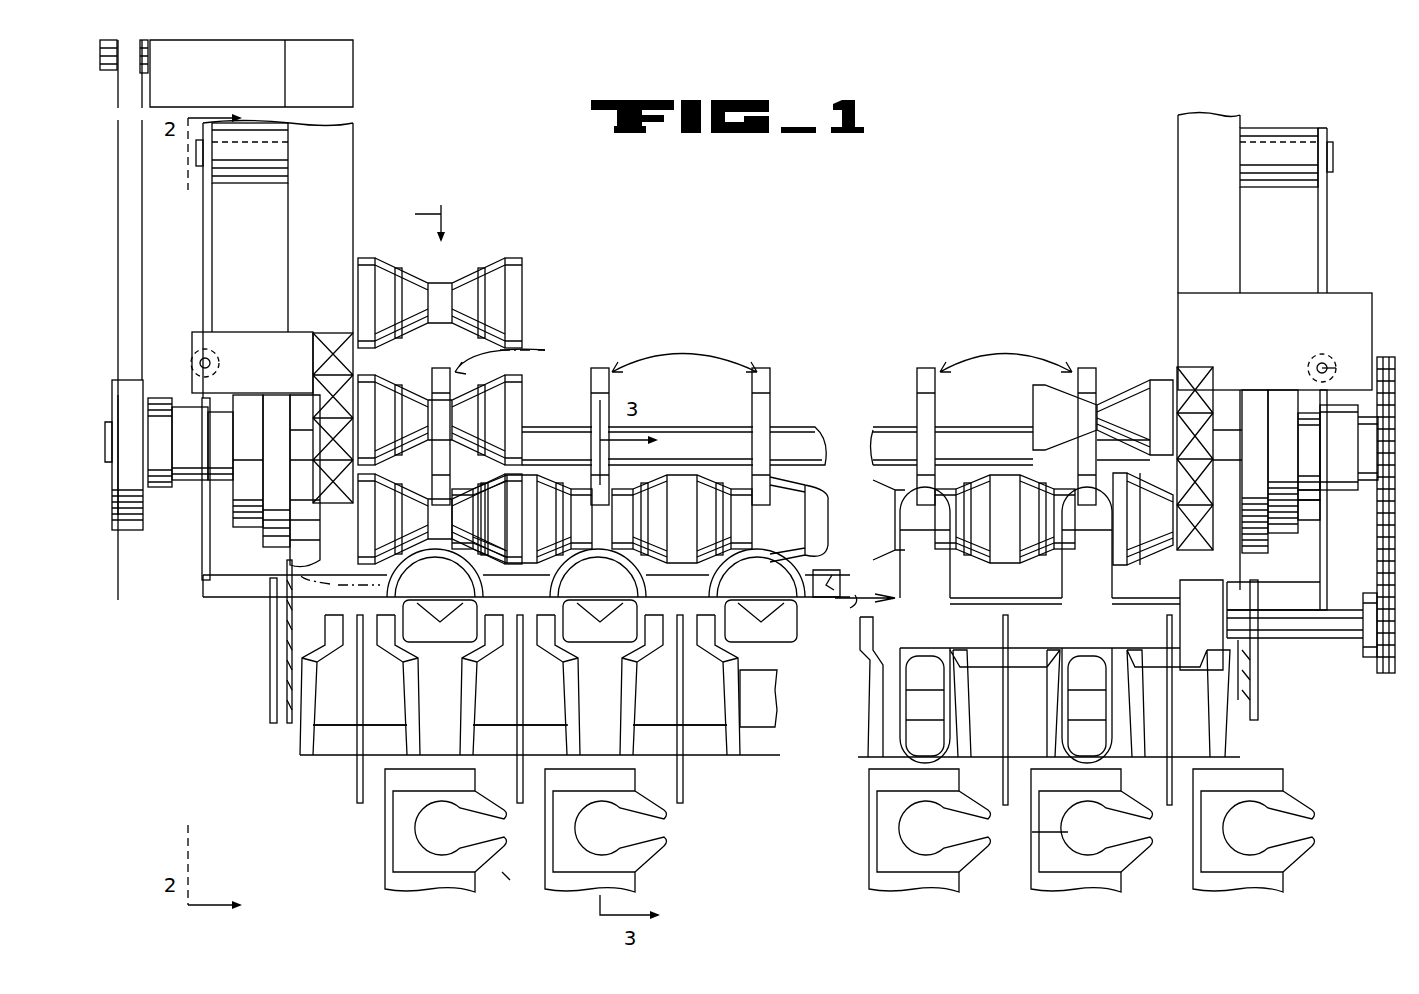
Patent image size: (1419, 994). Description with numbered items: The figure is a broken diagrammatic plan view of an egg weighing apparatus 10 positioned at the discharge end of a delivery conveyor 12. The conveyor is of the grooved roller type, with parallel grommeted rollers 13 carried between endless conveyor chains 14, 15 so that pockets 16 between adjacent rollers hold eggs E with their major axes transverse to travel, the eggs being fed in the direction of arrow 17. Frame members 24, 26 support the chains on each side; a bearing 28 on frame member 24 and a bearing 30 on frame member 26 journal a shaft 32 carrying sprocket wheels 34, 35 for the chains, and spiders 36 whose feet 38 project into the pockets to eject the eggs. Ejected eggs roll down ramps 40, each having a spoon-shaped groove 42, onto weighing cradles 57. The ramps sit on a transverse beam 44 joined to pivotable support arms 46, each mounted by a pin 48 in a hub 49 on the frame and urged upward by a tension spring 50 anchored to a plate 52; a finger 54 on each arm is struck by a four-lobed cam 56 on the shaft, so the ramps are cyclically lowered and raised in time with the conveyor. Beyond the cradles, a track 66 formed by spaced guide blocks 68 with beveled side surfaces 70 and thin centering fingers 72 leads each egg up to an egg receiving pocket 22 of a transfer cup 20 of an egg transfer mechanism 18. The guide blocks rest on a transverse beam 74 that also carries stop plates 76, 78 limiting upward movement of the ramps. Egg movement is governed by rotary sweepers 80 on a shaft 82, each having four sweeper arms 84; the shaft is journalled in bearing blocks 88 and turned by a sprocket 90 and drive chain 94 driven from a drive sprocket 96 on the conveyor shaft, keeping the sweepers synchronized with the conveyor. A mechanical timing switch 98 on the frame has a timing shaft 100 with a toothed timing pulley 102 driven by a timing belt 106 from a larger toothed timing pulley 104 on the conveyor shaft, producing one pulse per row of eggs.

The egg weighing apparatus 10 is at (830, 767).
The delivery conveyor 12 is at (1152, 364).
The grooved rollers 13 is at (522, 276).
The endless conveyor chain 14 is at (322, 357).
The endless conveyor chain 15 is at (1218, 410).
The pockets 16 is at (460, 340).
The arrow 17 is at (415, 221).
The egg transfer mechanism 18 is at (370, 844).
The transfer cup 20 is at (480, 865).
The egg receiving pocket 22 is at (458, 834).
The frame member 24 is at (353, 123).
The frame member 26 is at (1178, 160).
The bearing 28 is at (274, 400).
The bearing 30 is at (1268, 390).
The shaft 32 is at (875, 425).
The sprocket wheel 34 is at (353, 380).
The sprocket wheel 35 is at (1200, 385).
The spiders 36 is at (763, 357).
The feet 38 is at (609, 385).
The ramps 40 is at (538, 548).
The spoon-shaped groove 42 is at (596, 573).
The transverse beam 44 is at (228, 598).
The support arm 46 is at (200, 542).
The pin 48 is at (198, 165).
The hub 49 is at (270, 183).
The tension spring 50 is at (222, 335).
The plate 52 is at (240, 342).
The finger 54 is at (196, 512).
The four-lobed cam 56 is at (186, 480).
The weighing cradles 57 is at (462, 640).
The track 66 is at (282, 748).
The guide blocks 68 is at (330, 755).
The beveled side surfaces 70 is at (470, 735).
The finger 72 is at (357, 796).
The transverse beam 74 is at (765, 727).
The stop plate 76 is at (268, 643).
The stop plate 78 is at (1258, 684).
The rotary sweepers 80 is at (885, 614).
The shaft 82 is at (1352, 638).
The sweeper arms 84 is at (1065, 705).
The bearing blocks 88 is at (1061, 625).
The sprocket 90 is at (1383, 666).
The drive chain 94 is at (1380, 574).
The drive sprocket 96 is at (1370, 440).
The mechanical timing switch 98 is at (251, 73).
The timing shaft 100 is at (108, 46).
The toothed timing pulley 102 is at (150, 66).
The toothed timing pulley 104 is at (138, 370).
The timing belt 106 is at (142, 255).
The eggs E is at (433, 467).